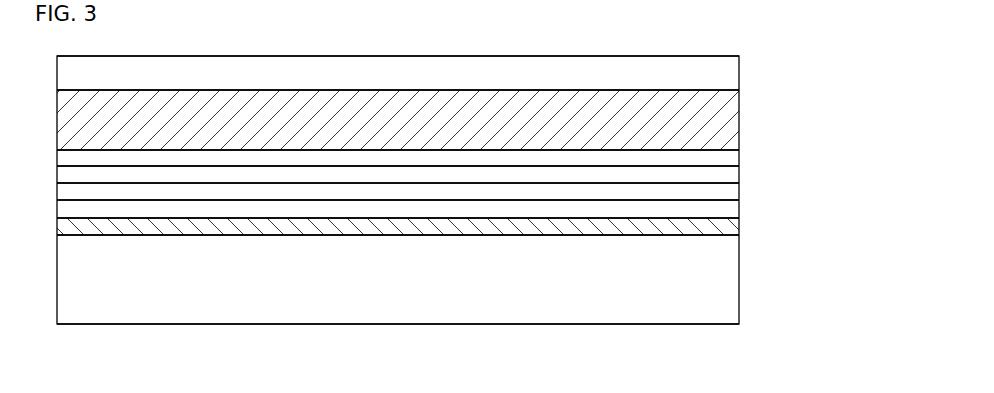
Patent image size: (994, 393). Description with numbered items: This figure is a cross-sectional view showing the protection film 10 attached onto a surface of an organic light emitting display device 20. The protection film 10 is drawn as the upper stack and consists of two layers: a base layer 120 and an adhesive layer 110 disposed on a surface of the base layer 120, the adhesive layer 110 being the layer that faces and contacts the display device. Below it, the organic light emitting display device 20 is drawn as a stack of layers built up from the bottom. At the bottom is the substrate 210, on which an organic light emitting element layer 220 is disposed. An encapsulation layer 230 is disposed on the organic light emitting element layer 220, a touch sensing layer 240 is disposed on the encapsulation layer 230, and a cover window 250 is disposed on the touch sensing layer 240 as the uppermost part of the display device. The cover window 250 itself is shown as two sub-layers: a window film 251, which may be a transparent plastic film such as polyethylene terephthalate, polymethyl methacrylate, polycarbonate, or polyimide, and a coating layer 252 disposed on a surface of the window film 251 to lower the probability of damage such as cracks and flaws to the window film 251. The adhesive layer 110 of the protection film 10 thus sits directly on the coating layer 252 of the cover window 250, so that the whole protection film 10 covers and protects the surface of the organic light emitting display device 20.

The protection film 10 is at (453, 103).
The base layer 120 is at (728, 74).
The adhesive layer 110 is at (728, 124).
The organic light emitting display device 20 is at (483, 229).
The cover window 250 is at (459, 167).
The coating layer 252 is at (728, 158).
The window film 251 is at (728, 175).
The touch sensing layer 240 is at (728, 192).
The encapsulation layer 230 is at (728, 209).
The organic light emitting element layer 220 is at (728, 226).
The substrate 210 is at (459, 279).